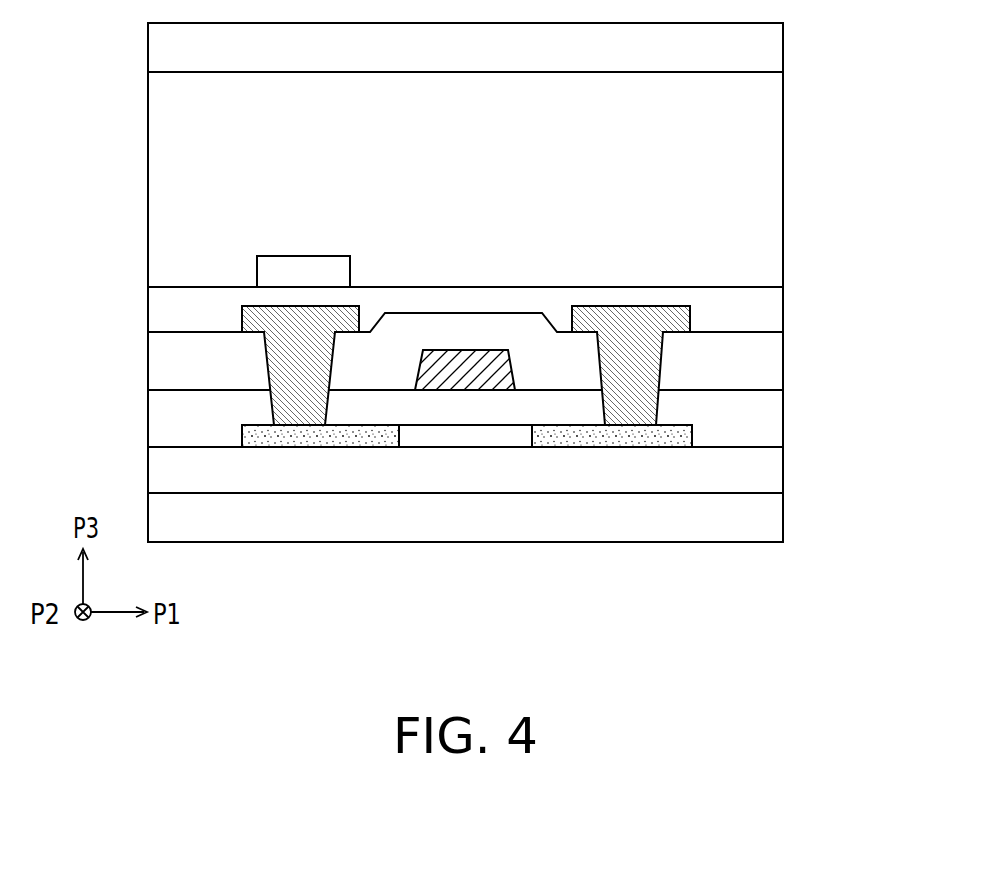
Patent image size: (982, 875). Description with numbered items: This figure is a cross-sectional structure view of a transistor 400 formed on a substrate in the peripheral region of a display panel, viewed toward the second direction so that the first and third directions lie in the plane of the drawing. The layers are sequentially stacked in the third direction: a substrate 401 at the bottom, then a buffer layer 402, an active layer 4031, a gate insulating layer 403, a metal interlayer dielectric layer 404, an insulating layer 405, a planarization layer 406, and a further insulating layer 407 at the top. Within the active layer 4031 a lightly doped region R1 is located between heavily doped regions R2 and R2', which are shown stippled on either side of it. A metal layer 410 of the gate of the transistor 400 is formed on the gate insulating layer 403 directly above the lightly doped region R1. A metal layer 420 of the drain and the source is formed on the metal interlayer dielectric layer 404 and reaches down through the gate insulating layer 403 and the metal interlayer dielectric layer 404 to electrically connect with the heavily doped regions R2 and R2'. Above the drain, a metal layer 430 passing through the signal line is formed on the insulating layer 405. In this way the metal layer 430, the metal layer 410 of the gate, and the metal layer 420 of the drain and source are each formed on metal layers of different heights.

The transistor 400 is at (890, 597).
The substrate 401 is at (763, 522).
The buffer layer 402 is at (763, 473).
The gate insulating layer 403 is at (763, 421).
The active layer 4031 is at (240, 436).
The metal interlayer dielectric layer 404 is at (763, 367).
The insulating layer 405 is at (743, 297).
The planarization layer 406 is at (763, 173).
The insulating layer 407 is at (763, 47).
The metal layer of the gate 410 is at (460, 365).
The metal layer of the drain and the source 420 is at (250, 318).
The metal layer passing through the signal line 430 is at (265, 272).
The lightly doped region R1 is at (468, 439).
The heavily doped region R2 is at (327, 518).
The heavily doped region R2' is at (614, 518).